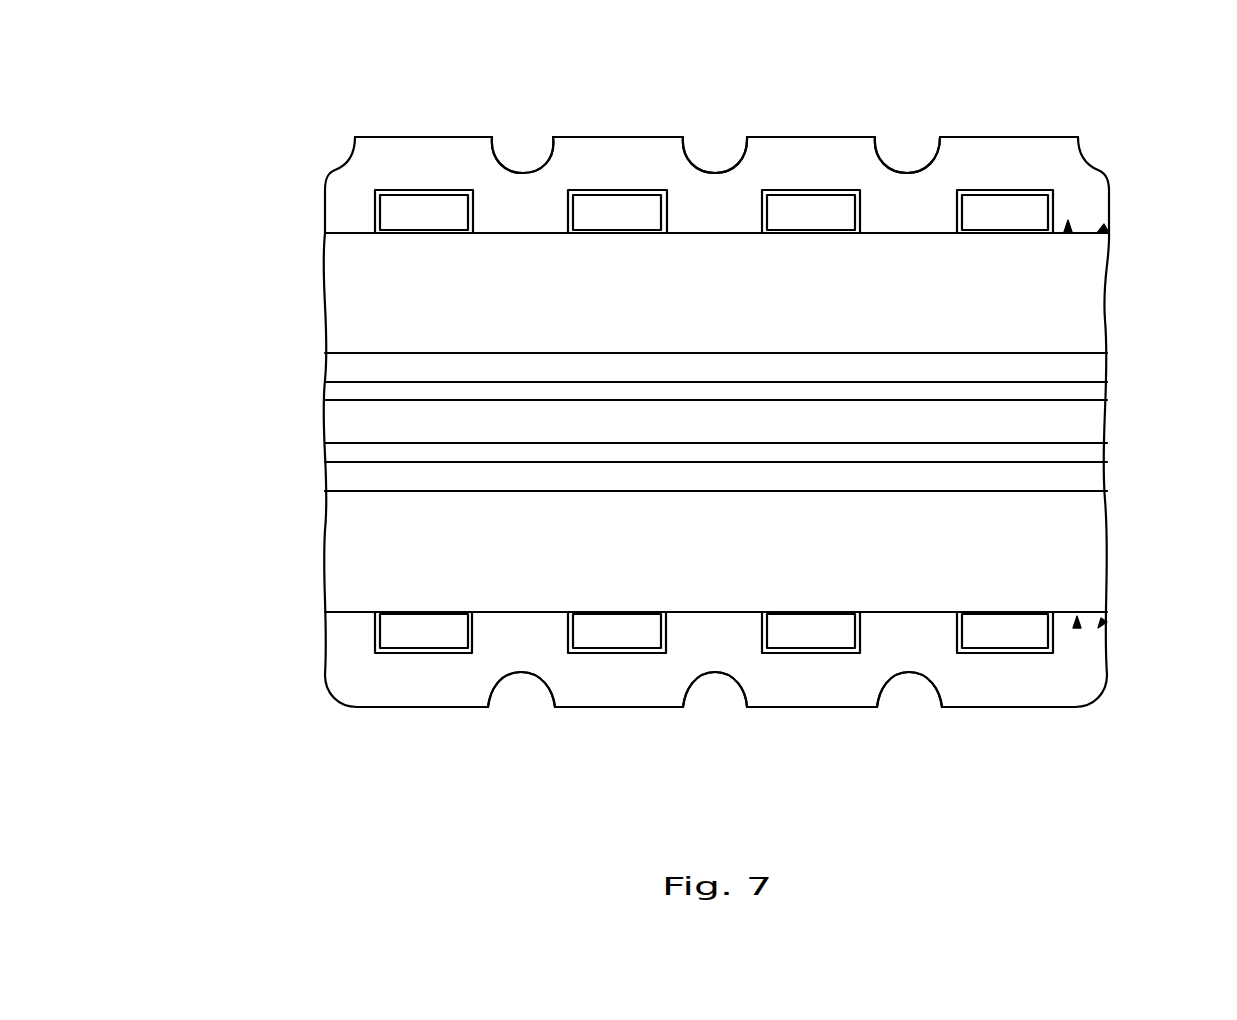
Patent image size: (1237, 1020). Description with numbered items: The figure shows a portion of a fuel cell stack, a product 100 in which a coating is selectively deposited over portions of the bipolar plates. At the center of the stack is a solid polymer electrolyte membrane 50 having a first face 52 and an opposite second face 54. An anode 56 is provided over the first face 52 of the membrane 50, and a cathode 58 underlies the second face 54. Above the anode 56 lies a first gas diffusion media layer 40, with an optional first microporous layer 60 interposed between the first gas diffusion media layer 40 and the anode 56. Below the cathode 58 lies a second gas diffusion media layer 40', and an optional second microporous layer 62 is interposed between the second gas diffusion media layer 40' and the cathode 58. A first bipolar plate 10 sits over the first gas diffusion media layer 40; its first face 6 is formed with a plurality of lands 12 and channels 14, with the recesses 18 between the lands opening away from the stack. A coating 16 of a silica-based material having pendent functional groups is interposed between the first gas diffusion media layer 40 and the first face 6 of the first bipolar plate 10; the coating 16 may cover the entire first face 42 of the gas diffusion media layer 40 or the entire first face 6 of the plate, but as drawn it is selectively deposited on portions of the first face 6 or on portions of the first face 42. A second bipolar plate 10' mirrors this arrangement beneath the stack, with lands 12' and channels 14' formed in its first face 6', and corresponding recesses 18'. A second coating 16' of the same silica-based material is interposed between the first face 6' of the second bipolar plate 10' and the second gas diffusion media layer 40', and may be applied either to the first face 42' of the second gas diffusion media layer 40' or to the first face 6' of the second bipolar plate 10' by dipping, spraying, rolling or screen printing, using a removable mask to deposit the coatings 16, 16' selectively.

The product 100 is at (288, 210).
The first bipolar plate 10 is at (748, 143).
The second bipolar plate 10' is at (653, 683).
The lands 12 is at (773, 163).
The lands 12' is at (704, 719).
The channels 14 is at (716, 145).
The channels 14' is at (699, 703).
The coating 16 is at (714, 129).
The second coating 16' is at (623, 710).
The upper recess 18 is at (716, 128).
The lower recess 18' is at (713, 729).
The first gas diffusion media layer 40 is at (673, 270).
The second gas diffusion media layer 40' is at (672, 588).
The first face 42 is at (1157, 209).
The first face 42' is at (1127, 645).
The first face 6 is at (1117, 296).
The first face 6' is at (1140, 597).
The solid polymer electrolyte membrane 50 is at (348, 413).
The first face 52 is at (340, 399).
The second face 54 is at (328, 450).
The anode 56 is at (345, 387).
The cathode 58 is at (385, 450).
The first microporous layer 60 is at (348, 358).
The second microporous layer 62 is at (393, 480).